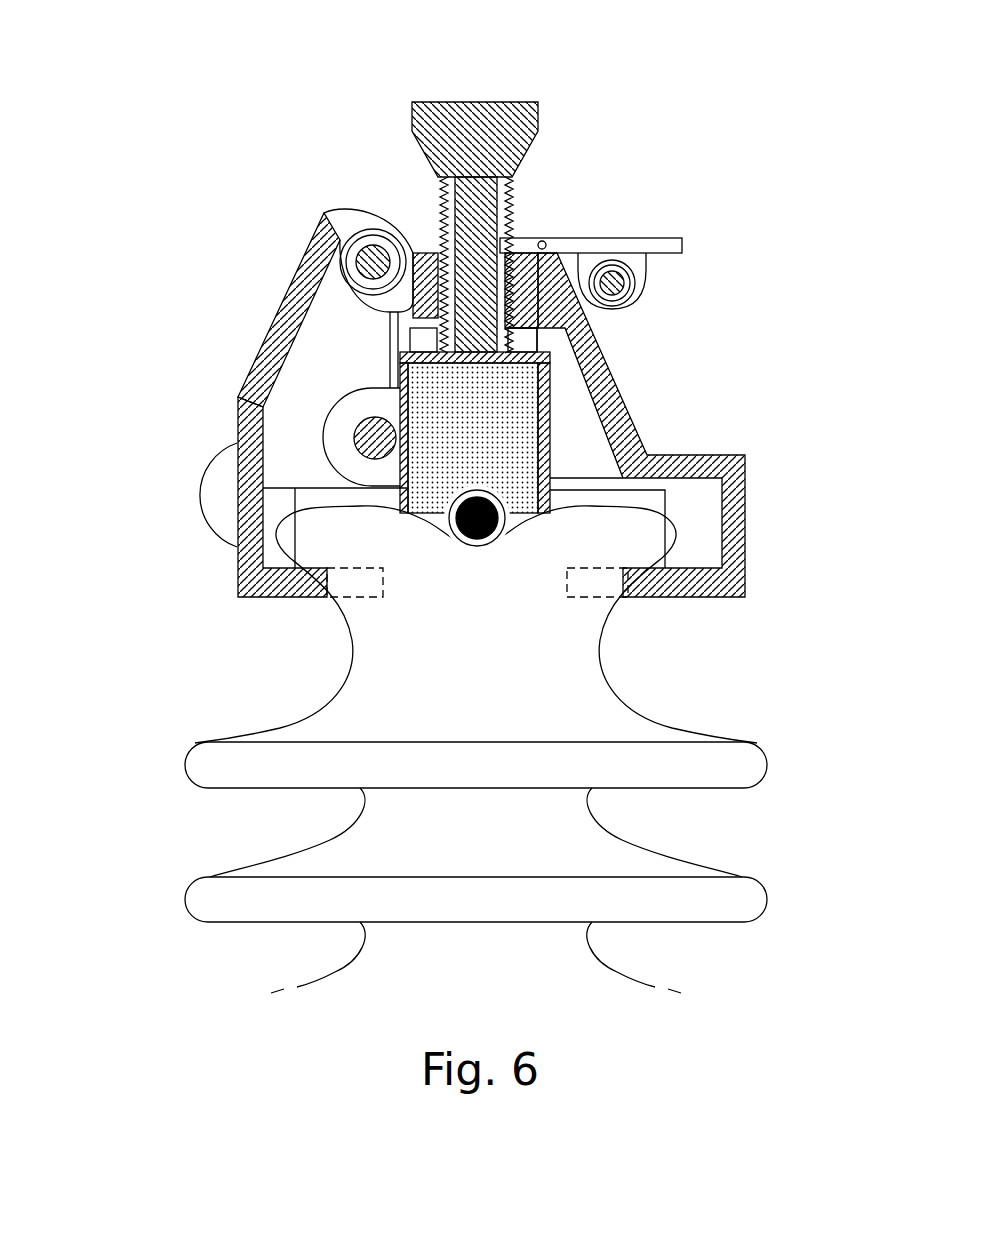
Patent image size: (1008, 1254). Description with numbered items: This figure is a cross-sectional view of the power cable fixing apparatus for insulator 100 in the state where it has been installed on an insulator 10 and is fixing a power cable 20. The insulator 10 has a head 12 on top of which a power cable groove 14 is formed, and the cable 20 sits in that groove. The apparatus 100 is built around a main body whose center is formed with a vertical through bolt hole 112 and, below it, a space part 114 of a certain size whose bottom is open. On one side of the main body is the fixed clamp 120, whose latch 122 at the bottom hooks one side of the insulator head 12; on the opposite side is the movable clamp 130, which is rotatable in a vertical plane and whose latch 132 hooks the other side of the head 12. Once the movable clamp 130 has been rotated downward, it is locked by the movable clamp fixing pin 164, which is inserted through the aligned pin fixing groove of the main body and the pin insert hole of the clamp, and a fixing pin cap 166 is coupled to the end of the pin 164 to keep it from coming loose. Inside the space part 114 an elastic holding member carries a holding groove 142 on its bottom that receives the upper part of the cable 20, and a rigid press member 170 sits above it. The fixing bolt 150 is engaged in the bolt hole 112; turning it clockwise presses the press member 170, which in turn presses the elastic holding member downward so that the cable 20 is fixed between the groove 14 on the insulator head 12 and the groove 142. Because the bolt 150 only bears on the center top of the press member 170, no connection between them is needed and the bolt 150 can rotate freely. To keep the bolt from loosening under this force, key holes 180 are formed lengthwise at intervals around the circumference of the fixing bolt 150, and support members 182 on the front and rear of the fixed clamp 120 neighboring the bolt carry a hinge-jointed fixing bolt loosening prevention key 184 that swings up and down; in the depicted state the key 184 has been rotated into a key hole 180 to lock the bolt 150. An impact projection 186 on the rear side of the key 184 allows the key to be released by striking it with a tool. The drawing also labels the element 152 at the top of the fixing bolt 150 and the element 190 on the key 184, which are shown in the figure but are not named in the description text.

The insulator 10 is at (200, 762).
The insulator head 12 is at (290, 527).
The power cable groove 14 is at (422, 523).
The power cable 20 is at (567, 572).
The power cable fixing apparatus for insulator 100 is at (752, 165).
The bolt hole 112 is at (447, 230).
The space part 114 is at (398, 480).
The fixed clamp 120 is at (640, 437).
The latch 122 is at (578, 585).
The movable clamp 130 is at (245, 377).
The latch 132 is at (363, 588).
The holding groove 142 is at (490, 548).
The fixing bolt 150 is at (518, 240).
The bolt head 152 is at (452, 106).
The movable clamp fixing pin 164 is at (367, 405).
The fixing pin cap 166 is at (354, 437).
The press member 170 is at (555, 337).
The key hole 180 is at (447, 210).
The support member 182 is at (590, 317).
The fixing bolt loosening prevention key 184 is at (540, 235).
The impact projection 186 is at (672, 248).
The pin 190 is at (520, 242).